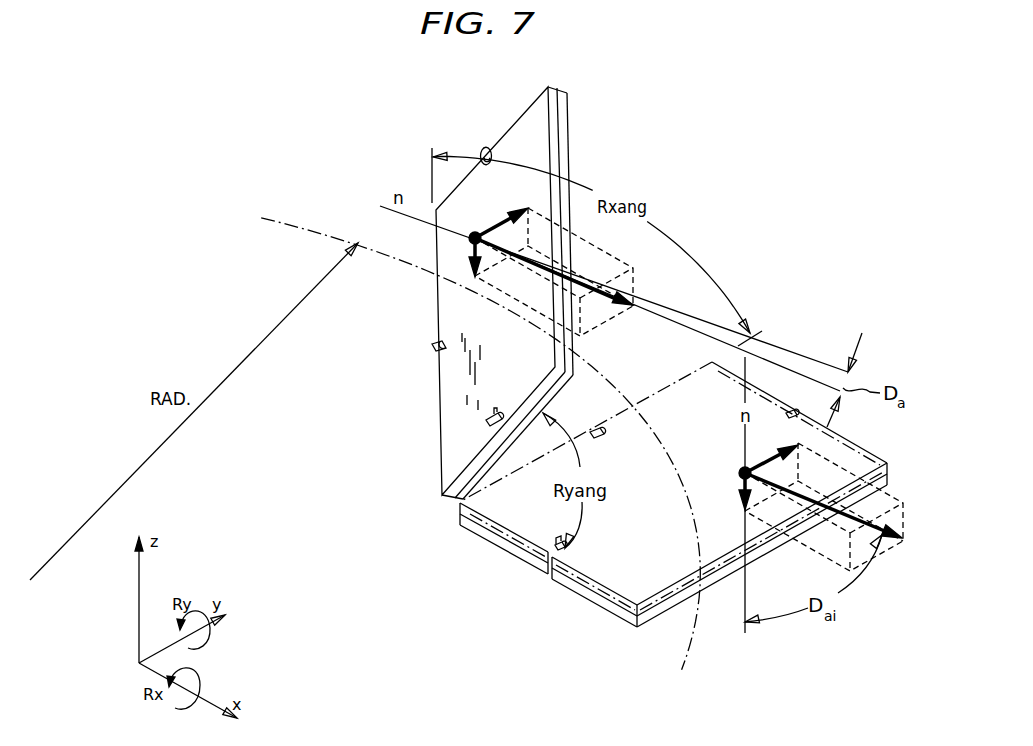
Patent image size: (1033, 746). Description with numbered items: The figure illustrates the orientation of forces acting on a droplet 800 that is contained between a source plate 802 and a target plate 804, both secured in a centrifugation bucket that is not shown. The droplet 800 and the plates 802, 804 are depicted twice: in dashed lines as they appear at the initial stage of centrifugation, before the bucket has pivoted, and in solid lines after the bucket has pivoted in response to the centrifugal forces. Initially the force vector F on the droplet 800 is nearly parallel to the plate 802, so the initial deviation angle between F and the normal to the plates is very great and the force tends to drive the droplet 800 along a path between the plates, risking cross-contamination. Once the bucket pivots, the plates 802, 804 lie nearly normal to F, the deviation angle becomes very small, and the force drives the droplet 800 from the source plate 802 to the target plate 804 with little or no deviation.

The droplet 800 is at (468, 240).
The source plate 802 is at (460, 395).
The target plate 804 is at (460, 503).